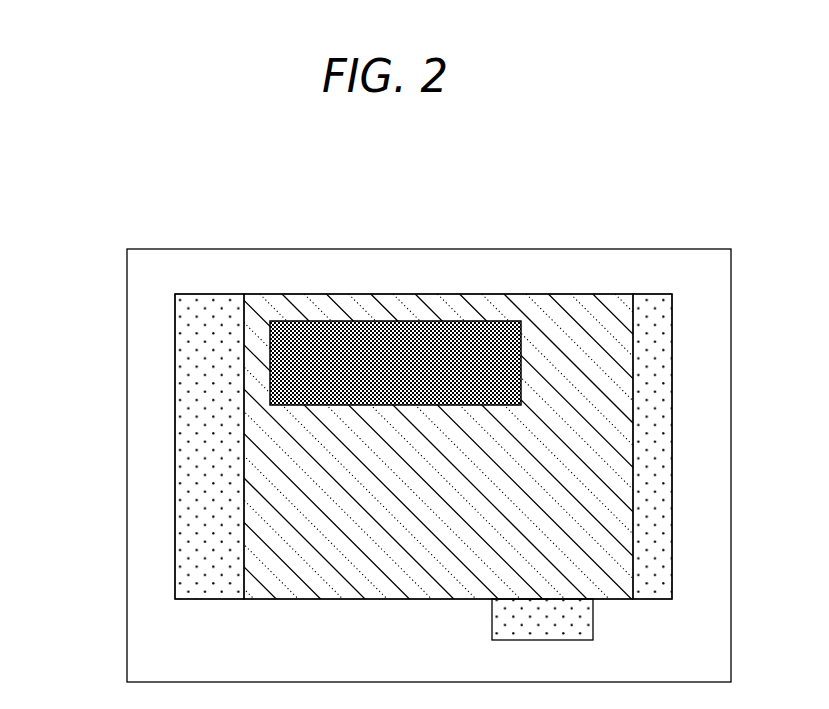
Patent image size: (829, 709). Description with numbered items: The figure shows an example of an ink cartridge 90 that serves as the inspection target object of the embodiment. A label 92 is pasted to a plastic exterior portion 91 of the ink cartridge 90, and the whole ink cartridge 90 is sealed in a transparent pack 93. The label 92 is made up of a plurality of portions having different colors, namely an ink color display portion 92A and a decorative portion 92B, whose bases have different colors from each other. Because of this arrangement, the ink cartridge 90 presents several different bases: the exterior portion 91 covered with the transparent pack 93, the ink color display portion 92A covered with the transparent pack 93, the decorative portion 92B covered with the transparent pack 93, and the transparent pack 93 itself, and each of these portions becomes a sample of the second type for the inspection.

The ink cartridge 90 is at (605, 183).
The plastic exterior portion 91 is at (193, 383).
The label 92 is at (414, 375).
The ink color display portion 92A is at (448, 321).
The decorative portion 92B is at (253, 558).
The transparent pack 93 is at (340, 268).